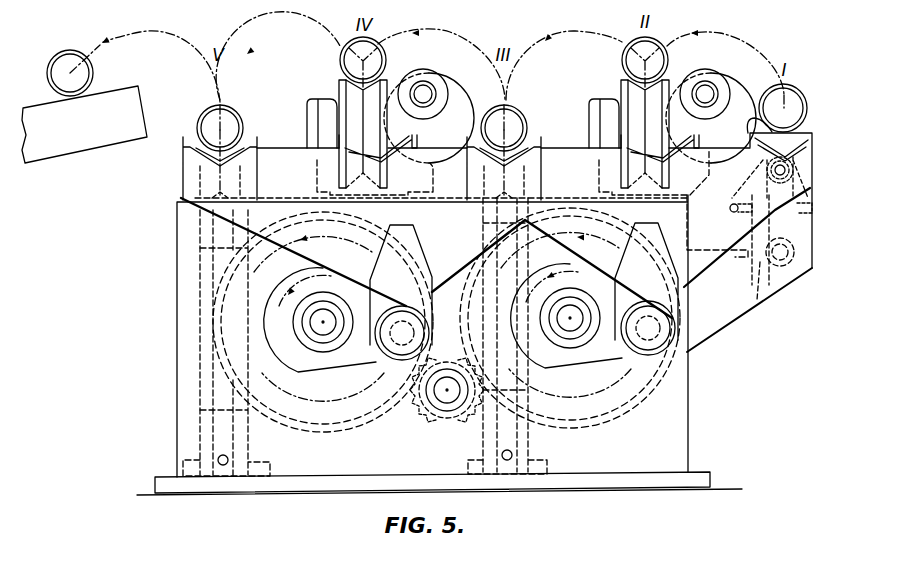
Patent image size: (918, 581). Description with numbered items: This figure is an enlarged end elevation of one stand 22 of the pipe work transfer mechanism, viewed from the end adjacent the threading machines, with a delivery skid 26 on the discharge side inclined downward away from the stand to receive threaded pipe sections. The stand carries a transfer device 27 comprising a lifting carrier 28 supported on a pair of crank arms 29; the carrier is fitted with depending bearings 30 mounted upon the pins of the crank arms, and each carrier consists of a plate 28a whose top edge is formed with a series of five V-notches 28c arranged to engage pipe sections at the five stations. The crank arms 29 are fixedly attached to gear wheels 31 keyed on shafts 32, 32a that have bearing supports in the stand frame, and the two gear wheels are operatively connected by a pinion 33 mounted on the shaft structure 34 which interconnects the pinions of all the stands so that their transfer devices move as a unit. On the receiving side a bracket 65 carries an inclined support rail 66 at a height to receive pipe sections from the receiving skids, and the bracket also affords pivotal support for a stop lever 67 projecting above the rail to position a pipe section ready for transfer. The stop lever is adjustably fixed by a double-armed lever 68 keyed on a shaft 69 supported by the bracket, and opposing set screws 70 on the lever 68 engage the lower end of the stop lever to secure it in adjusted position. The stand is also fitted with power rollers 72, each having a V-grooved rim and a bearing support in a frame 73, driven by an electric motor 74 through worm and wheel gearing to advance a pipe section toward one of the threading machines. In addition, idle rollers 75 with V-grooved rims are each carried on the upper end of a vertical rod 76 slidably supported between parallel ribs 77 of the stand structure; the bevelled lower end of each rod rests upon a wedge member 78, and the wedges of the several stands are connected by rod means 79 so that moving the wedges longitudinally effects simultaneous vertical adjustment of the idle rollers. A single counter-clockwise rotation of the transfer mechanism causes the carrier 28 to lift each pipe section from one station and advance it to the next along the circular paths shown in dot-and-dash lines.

The stand 22 is at (175, 235).
The delivery skid 26 is at (112, 92).
The transfer device 27 is at (262, 272).
The carrier 28 is at (465, 275).
The plate 28a is at (700, 263).
The V-notch 28c is at (183, 157).
The crank arm 29 is at (358, 367).
The depending bearing 30 is at (403, 330).
The gear wheel 31 is at (318, 433).
The shaft 32 is at (570, 330).
The shaft 32a is at (322, 334).
The pinion 33 is at (458, 430).
The shaft structure 34 is at (440, 400).
The bracket 65 is at (727, 318).
The inclined support rail 66 is at (808, 100).
The stop lever 67 is at (752, 118).
The double-armed lever 68 is at (788, 262).
The shaft 69 is at (768, 268).
The set screw 70 is at (732, 212).
The power roller 72 is at (342, 95).
The frame 73 is at (319, 110).
The electric motor 74 is at (452, 100).
The idle roller 75 is at (212, 142).
The vertical rod 76 is at (213, 280).
The parallel rib 77 is at (200, 322).
The wedge member 78 is at (220, 435).
The rod means 79 is at (223, 467).